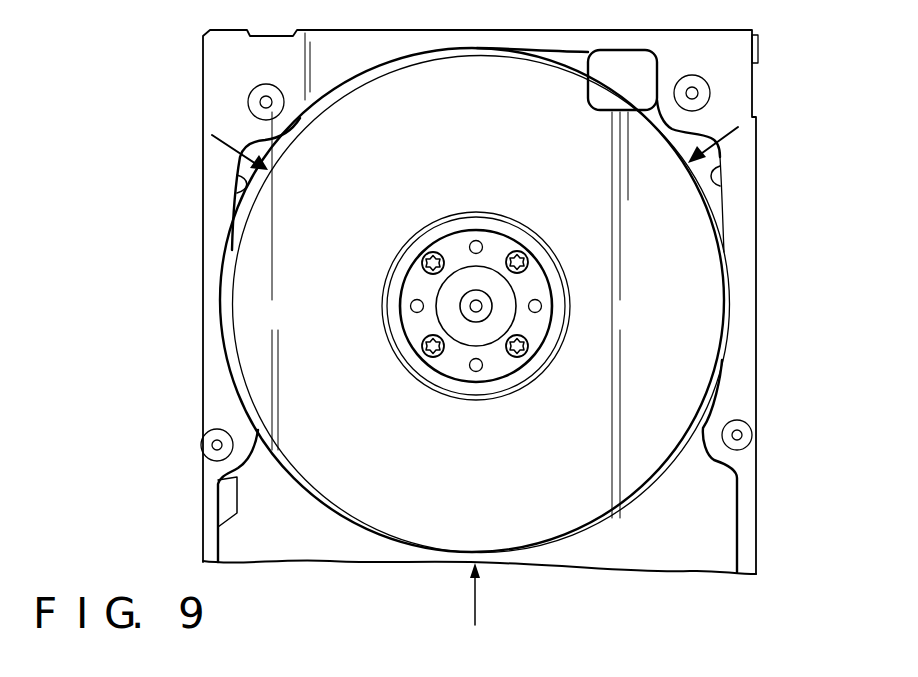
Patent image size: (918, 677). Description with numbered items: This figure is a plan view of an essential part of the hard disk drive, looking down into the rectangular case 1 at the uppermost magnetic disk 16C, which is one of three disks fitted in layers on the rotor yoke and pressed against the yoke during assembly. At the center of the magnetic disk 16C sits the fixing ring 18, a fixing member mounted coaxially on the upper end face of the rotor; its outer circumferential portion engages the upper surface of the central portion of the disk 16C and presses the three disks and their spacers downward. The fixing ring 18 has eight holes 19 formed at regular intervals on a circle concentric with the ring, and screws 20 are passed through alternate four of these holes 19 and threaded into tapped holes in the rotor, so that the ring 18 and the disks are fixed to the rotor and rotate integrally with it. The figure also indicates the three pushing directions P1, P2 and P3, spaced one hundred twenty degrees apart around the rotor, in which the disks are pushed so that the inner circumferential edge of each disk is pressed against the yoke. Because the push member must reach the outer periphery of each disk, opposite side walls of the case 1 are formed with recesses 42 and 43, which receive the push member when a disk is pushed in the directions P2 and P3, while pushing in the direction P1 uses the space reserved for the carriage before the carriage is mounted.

The case 1 is at (213, 407).
The magnetic disk 16C is at (237, 305).
The fixing ring 18 is at (415, 333).
The holes 19 is at (473, 242).
The screws 20 is at (524, 257).
The recess 42 is at (716, 178).
The recess 43 is at (247, 188).
The direction P1 is at (488, 594).
The direction P2 is at (722, 141).
The direction P3 is at (236, 148).